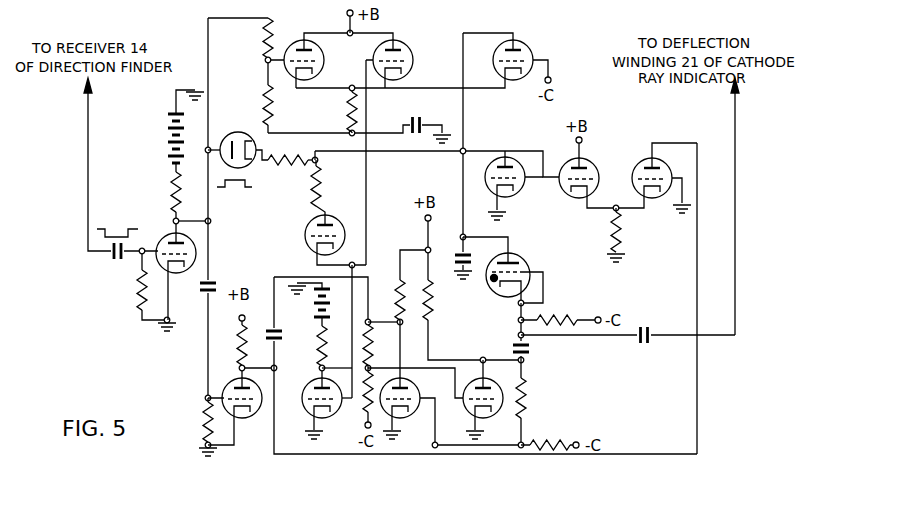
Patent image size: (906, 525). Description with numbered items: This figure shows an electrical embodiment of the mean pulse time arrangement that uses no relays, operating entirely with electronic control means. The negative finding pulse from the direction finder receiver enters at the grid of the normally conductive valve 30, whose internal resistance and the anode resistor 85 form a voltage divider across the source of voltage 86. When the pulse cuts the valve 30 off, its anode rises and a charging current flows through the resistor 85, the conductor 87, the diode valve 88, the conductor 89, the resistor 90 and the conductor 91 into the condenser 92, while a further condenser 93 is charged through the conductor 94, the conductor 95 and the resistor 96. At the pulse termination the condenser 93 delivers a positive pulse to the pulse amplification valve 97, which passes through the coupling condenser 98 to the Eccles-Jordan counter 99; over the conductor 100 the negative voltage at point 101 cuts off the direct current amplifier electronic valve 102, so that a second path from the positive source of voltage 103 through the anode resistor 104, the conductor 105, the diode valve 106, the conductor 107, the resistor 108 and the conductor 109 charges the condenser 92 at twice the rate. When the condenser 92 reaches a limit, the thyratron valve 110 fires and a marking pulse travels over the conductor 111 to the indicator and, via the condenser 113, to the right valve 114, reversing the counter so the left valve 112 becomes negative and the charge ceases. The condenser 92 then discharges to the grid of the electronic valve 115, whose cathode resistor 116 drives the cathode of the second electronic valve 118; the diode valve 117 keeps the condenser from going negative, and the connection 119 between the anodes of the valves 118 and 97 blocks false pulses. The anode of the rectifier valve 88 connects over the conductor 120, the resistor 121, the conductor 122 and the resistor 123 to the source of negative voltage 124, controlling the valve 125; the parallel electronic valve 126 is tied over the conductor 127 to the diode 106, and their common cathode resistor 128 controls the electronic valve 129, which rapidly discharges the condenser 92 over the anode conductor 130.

The valve 30 is at (168, 238).
The anode resistor 85 is at (170, 180).
The source of voltage 86 is at (168, 130).
The conductor 87 is at (209, 198).
The diode valve 88 is at (237, 133).
The conductor 89 is at (246, 187).
The resistor 90 is at (283, 163).
The conductor 91 is at (388, 152).
The condenser 92 is at (452, 258).
The condenser 93 is at (206, 289).
The conductor 94 is at (208, 252).
The conductor 95 is at (208, 336).
The resistor 96 is at (210, 406).
The pulse amplification valve 97 is at (258, 412).
The coupling condenser 98 is at (257, 339).
The counter according to Eccles-Jordan 99 is at (471, 357).
The conductor 100 is at (337, 424).
The point 101 is at (527, 440).
The direct current amplifier electronic valve 102 is at (303, 400).
The positive source of voltage 103 is at (318, 300).
The anode resistor 104 is at (320, 345).
The conductor 105 is at (348, 273).
The diode valve 106 is at (308, 243).
The conductor 107 is at (313, 207).
The resistor 108 is at (320, 198).
The conductor 109 is at (317, 162).
The thyratron valve 110 is at (523, 258).
The conductor 111 is at (660, 337).
The left valve 112 is at (410, 382).
The condenser 113 is at (537, 343).
The right valve 114 is at (472, 399).
The electronic valve 115 is at (593, 163).
The resistor 116 is at (619, 220).
The diode valve 117 is at (491, 183).
The second electronic valve 118 is at (676, 165).
The connection 119 is at (697, 420).
The conductor 120 is at (208, 113).
The resistor 121 is at (266, 36).
The conductor 122 is at (265, 62).
The resistor 123 is at (270, 90).
The source of negative voltage 124 is at (414, 115).
The valve 125 is at (298, 45).
The electronic valve 126 is at (407, 47).
The conductor 127 is at (366, 218).
The common cathode resistor 128 is at (349, 110).
The electronic valve 129 is at (524, 47).
The anode conductor 130 is at (463, 127).